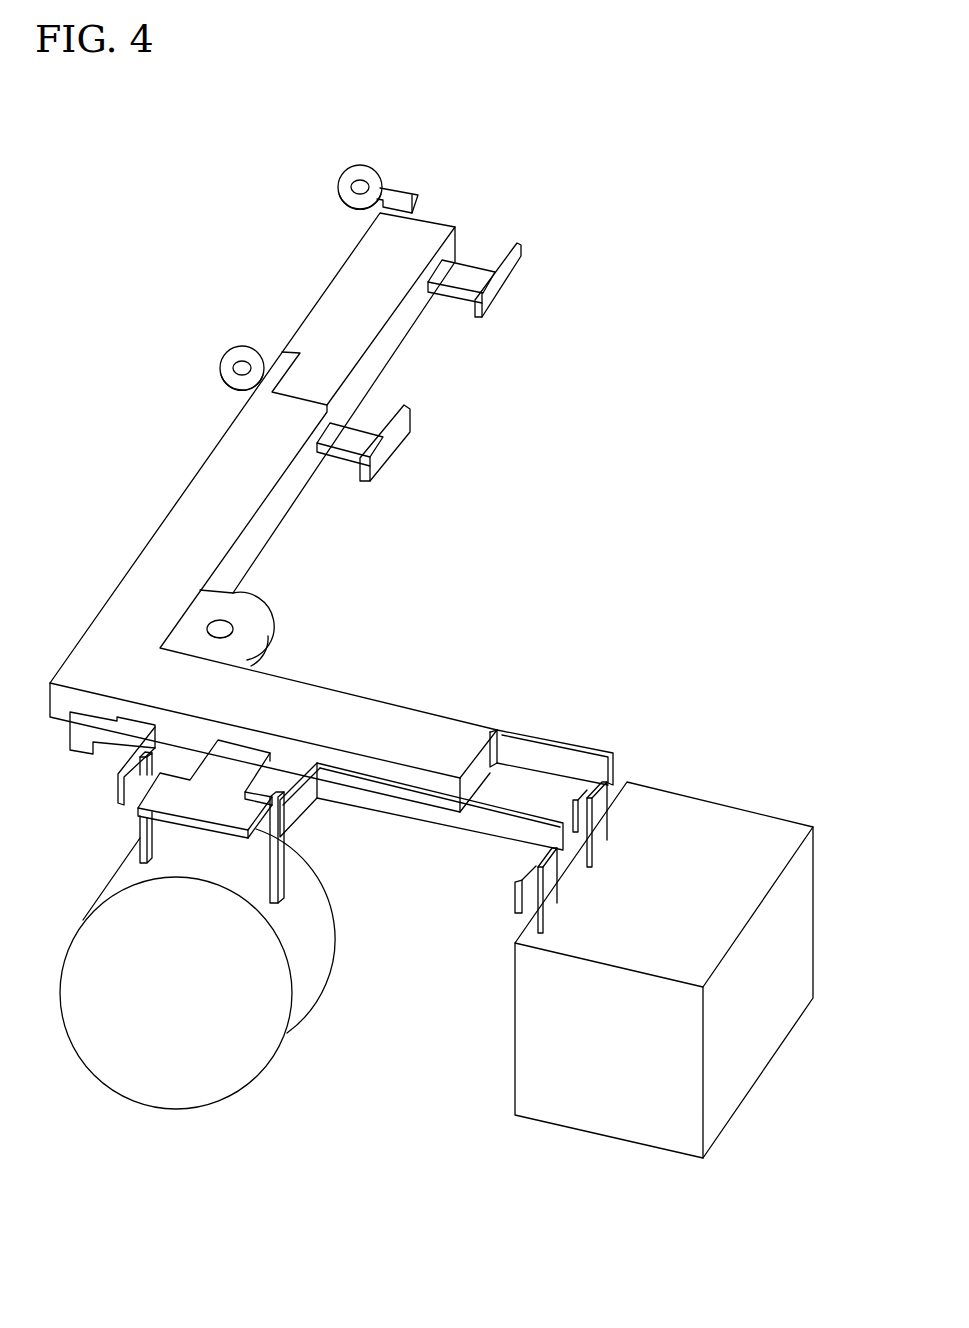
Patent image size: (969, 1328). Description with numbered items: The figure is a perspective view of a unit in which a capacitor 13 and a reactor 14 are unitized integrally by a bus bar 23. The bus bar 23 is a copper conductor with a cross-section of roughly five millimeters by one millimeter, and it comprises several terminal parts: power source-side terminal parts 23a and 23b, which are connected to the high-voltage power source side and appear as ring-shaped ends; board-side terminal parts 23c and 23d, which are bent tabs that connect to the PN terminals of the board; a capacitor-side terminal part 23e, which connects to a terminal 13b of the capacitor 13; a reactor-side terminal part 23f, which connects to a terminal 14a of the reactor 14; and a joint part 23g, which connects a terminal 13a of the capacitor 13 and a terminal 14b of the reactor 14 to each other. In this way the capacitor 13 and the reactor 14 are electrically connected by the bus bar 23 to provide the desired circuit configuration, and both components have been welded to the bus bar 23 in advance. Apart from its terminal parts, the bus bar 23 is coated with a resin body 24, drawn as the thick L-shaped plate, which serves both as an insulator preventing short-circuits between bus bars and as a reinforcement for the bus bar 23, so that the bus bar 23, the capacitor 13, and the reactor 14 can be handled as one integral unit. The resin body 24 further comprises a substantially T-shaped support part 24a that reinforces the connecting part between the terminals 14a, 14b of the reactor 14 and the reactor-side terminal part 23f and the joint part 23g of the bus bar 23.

The capacitor 13 is at (697, 806).
The terminal of the capacitor 13a is at (553, 912).
The terminal of the capacitor 13b is at (595, 840).
The reactor 14 is at (80, 954).
The terminal of the reactor 14a is at (150, 853).
The terminal of the reactor 14b is at (285, 878).
The bus bar 23 is at (470, 272).
The power source-side terminal part 23a is at (240, 362).
The power source-side terminal part 23b is at (362, 173).
The board-side terminal part 23c is at (397, 430).
The board-side terminal part 23d is at (504, 280).
The capacitor-side terminal part 23e is at (548, 740).
The reactor-side terminal part 23f is at (97, 757).
The joint part 23g is at (447, 812).
The resin body 24 is at (265, 508).
The support part 24a is at (160, 803).